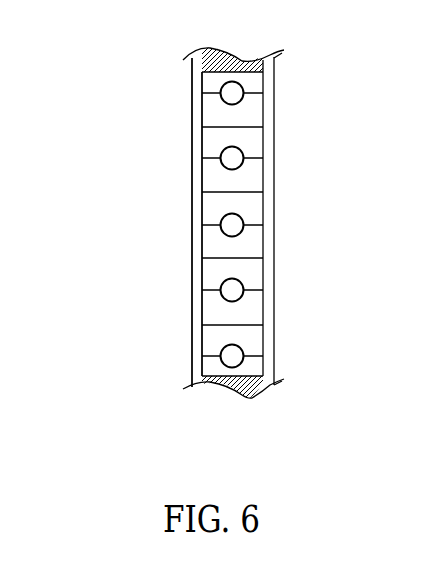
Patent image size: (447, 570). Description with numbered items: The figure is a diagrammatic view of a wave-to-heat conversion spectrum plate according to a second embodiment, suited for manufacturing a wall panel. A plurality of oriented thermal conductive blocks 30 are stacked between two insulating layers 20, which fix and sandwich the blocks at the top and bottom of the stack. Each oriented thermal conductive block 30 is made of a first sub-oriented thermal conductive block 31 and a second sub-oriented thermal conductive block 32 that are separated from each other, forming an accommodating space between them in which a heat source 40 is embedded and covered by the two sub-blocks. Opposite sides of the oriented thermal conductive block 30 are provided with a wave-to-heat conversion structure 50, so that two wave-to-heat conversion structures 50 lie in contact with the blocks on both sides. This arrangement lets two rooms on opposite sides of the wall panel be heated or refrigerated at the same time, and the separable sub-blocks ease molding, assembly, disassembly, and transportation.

The insulating layer 20 is at (237, 57).
The oriented thermal conductive block 30 is at (105, 70).
The first sub-oriented thermal conductive block 31 is at (199, 78).
The second sub-oriented thermal conductive block 32 is at (201, 106).
The heat source 40 is at (232, 158).
The wave-to-heat conversion structure 50 is at (195, 276).